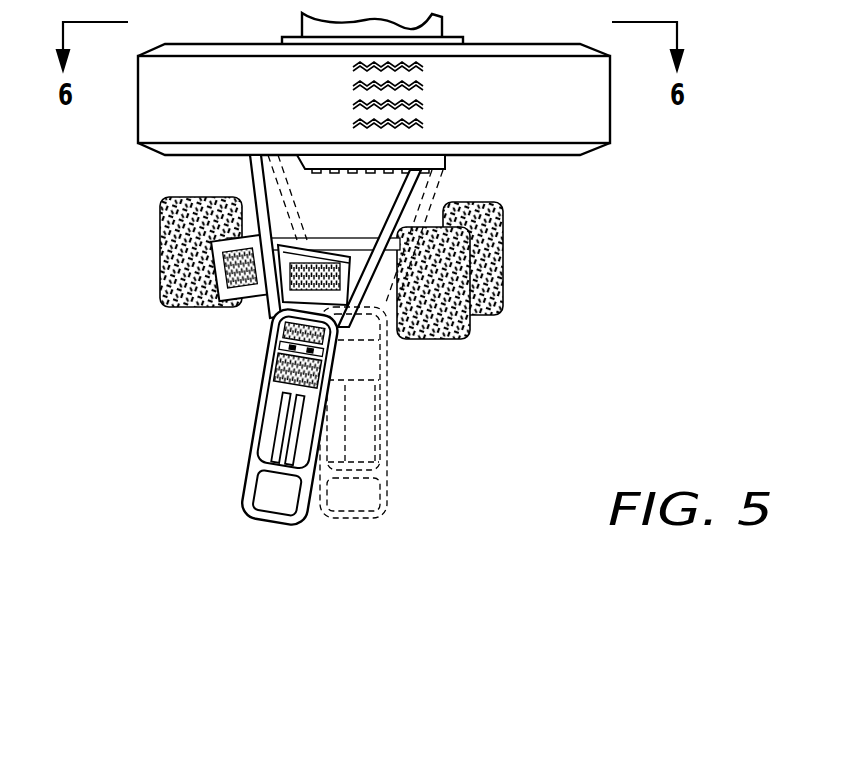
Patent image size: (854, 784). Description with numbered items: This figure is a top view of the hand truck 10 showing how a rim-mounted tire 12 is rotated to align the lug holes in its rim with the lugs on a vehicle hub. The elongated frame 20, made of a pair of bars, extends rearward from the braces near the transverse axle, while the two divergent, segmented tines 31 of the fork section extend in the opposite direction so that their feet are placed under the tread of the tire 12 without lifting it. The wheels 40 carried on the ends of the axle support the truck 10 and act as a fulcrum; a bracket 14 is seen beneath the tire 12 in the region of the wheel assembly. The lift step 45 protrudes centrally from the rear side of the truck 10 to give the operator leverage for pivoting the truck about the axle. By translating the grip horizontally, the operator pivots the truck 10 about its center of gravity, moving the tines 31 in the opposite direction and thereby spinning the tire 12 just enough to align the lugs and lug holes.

The hand truck 10 is at (133, 315).
The rim-mounted tire 12 is at (140, 137).
The mounting bracket 14 is at (445, 157).
The elongated frame 20 is at (244, 409).
The tines 31 is at (373, 233).
The wheels 40 is at (441, 345).
The lift step 45 is at (240, 497).